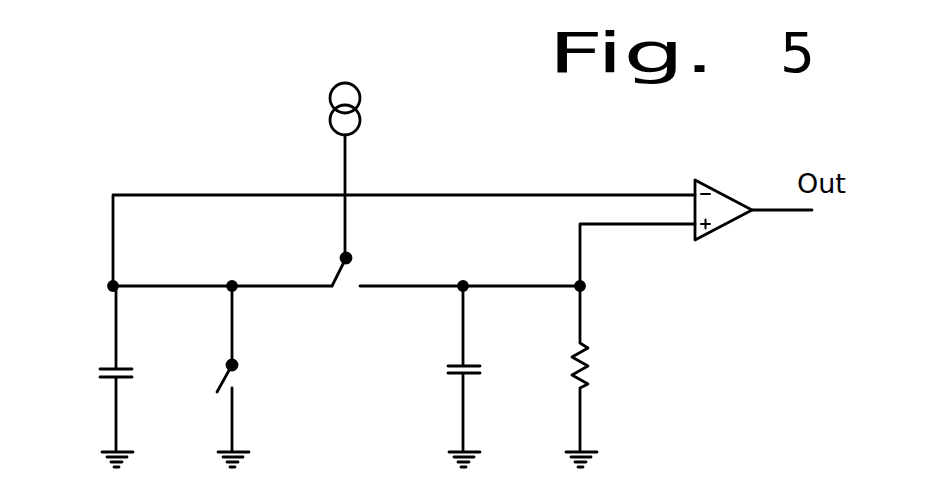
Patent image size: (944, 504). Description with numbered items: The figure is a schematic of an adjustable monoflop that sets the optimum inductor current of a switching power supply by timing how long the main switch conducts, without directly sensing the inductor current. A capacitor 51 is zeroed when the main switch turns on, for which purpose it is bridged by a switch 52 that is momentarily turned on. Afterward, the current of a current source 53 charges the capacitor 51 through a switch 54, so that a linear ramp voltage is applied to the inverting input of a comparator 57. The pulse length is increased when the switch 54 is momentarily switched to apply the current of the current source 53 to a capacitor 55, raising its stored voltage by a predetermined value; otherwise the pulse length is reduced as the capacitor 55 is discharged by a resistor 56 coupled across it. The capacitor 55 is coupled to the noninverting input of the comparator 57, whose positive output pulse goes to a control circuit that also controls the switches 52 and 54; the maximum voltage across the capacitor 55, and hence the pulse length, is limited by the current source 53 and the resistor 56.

The capacitor 51 is at (108, 378).
The switch 52 is at (235, 361).
The current source 53 is at (360, 120).
The switch 54 is at (349, 254).
The capacitor 55 is at (455, 374).
The resistor 56 is at (583, 385).
The comparator 57 is at (728, 227).